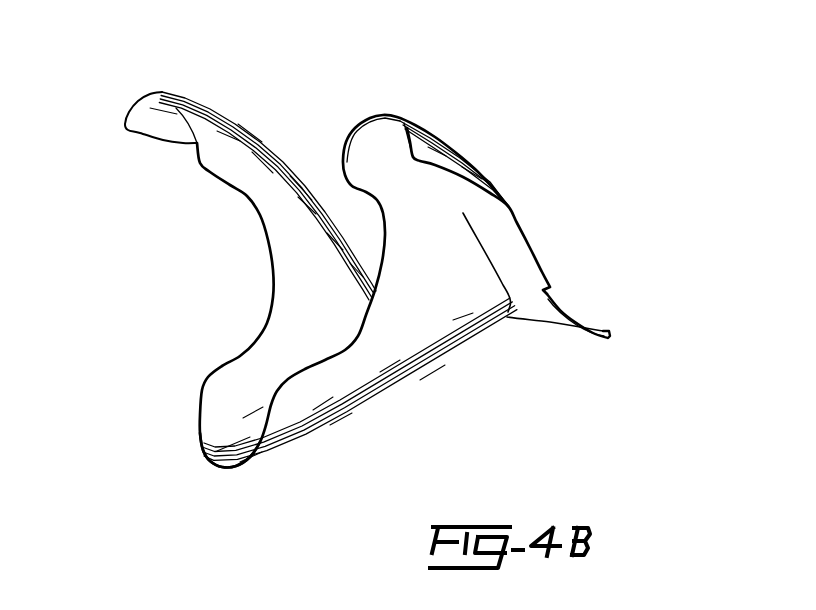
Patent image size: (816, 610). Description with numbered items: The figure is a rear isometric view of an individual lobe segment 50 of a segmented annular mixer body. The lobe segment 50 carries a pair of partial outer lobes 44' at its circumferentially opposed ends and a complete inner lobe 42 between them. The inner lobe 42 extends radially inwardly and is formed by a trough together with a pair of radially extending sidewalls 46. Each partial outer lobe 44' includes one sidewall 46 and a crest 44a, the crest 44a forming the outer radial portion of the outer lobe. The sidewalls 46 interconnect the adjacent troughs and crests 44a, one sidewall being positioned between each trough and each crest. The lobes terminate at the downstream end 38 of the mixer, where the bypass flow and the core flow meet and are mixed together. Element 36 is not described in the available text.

The end portion of bracket 36 is at (610, 330).
The downstream end 38 is at (201, 449).
The inner lobe 42 is at (223, 468).
The crest 44a is at (162, 92).
The partial outer lobe 44' is at (329, 163).
The sidewall 46 is at (285, 290).
The lobe segment 50 is at (509, 181).